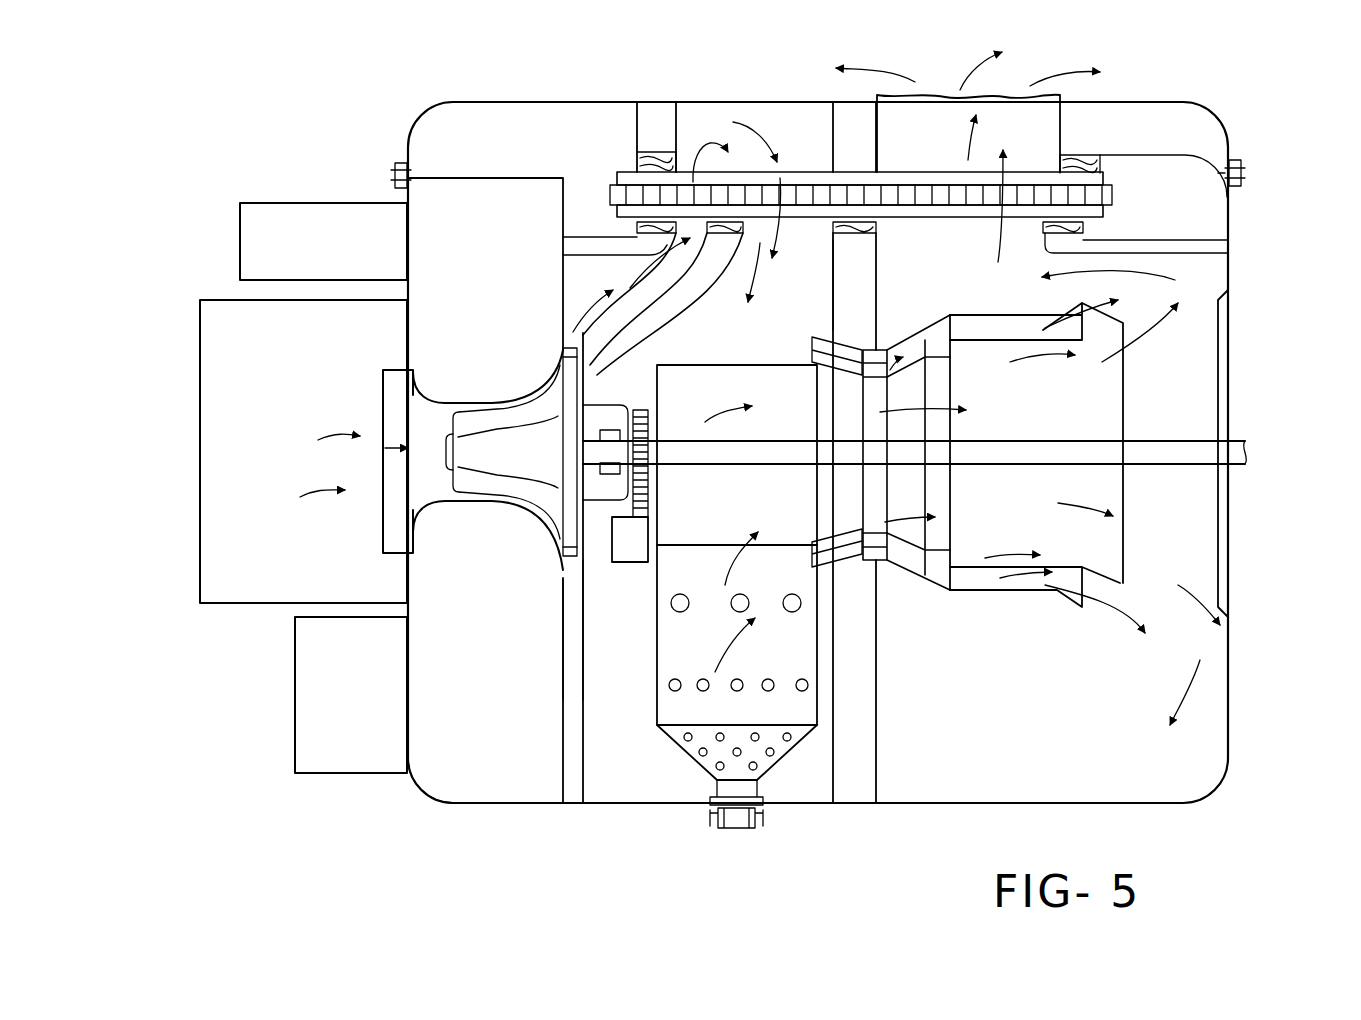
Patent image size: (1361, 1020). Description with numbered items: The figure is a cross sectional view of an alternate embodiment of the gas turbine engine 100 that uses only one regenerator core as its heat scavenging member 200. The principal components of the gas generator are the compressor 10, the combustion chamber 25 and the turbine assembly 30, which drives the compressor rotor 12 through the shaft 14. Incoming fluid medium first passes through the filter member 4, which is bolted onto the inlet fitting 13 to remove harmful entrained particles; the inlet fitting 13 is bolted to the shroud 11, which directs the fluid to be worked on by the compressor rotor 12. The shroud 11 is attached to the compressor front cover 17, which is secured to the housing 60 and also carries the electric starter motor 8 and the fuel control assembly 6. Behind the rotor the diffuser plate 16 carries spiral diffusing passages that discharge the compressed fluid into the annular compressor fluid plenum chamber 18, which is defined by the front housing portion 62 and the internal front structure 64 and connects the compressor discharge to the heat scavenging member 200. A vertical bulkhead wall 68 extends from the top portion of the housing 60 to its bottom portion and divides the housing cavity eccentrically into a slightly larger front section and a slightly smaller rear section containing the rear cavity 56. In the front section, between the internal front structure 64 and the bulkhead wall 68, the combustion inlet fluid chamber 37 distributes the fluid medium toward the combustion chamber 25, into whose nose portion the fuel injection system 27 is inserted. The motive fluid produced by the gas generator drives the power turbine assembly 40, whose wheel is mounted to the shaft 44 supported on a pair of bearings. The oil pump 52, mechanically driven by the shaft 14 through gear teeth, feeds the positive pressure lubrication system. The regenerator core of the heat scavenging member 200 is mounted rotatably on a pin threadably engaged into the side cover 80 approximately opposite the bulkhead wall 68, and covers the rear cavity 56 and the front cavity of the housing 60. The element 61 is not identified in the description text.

The filter member 4 is at (225, 604).
The fuel control assembly 6 is at (305, 775).
The electric starter motor 8 is at (258, 202).
The compressor 10 is at (556, 520).
The shroud 11 is at (514, 390).
The compressor rotor 12 is at (480, 504).
The inlet fitting 13 is at (425, 400).
The shaft 14 is at (768, 440).
The diffuser plate 16 is at (572, 582).
The compressor front cover 17 is at (400, 770).
The compressor fluid plenum chamber 18 is at (619, 280).
The combustion chamber 25 is at (616, 789).
The fuel injection system 27 is at (738, 832).
The turbine assembly 30 is at (881, 310).
The combustion inlet fluid chamber 37 is at (628, 724).
The power turbine assembly 40 is at (953, 600).
The shaft 44 is at (1180, 440).
The oil pump 52 is at (625, 565).
The rear cavity 56 is at (1100, 781).
The housing 60 is at (637, 808).
The panel 61 is at (1232, 790).
The front housing portion 62 is at (563, 290).
The internal front structure 64 is at (648, 318).
The bulkhead wall 68 is at (832, 284).
The side cover 80 is at (480, 101).
The gas turbine engine 100 is at (1273, 123).
The heat scavenging member 200 is at (943, 136).